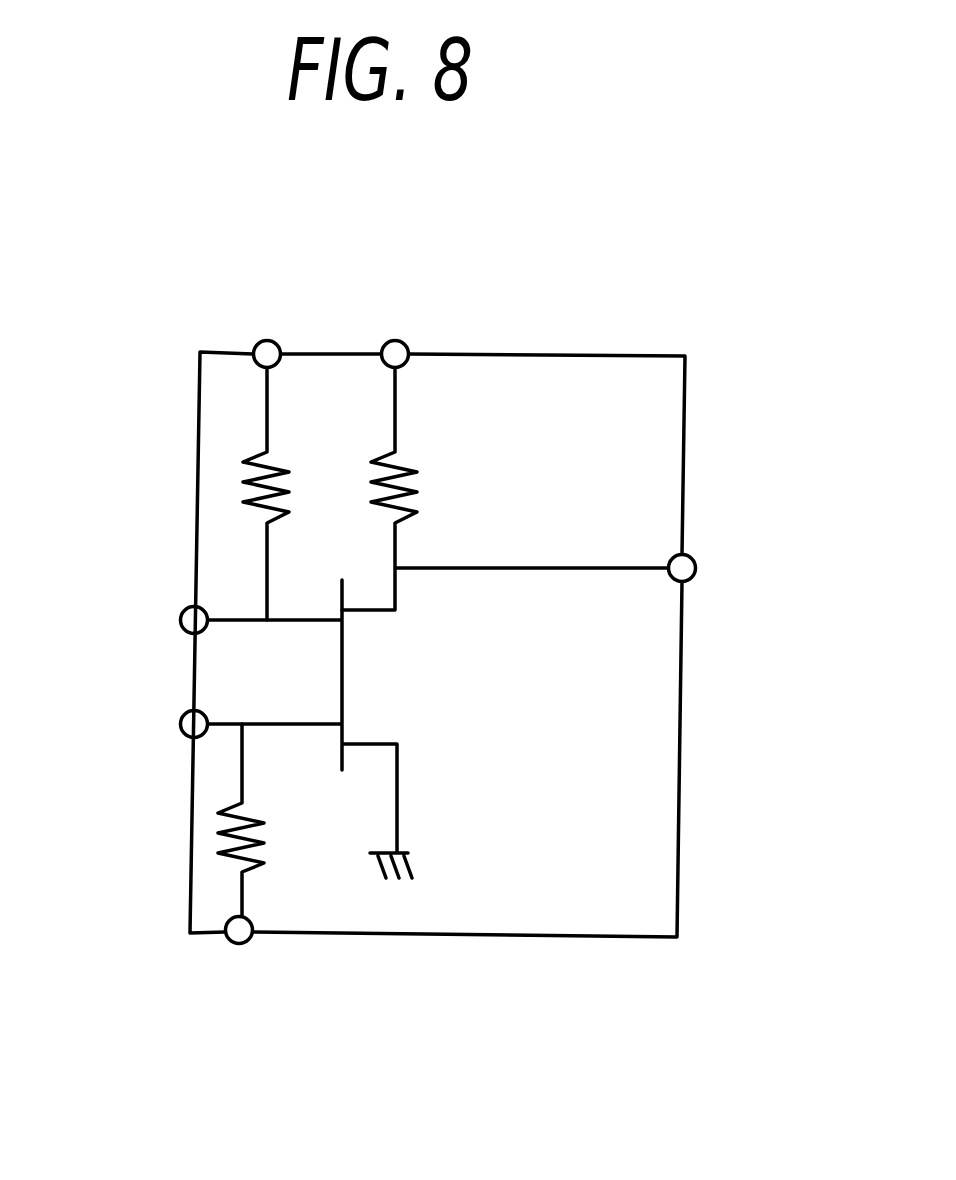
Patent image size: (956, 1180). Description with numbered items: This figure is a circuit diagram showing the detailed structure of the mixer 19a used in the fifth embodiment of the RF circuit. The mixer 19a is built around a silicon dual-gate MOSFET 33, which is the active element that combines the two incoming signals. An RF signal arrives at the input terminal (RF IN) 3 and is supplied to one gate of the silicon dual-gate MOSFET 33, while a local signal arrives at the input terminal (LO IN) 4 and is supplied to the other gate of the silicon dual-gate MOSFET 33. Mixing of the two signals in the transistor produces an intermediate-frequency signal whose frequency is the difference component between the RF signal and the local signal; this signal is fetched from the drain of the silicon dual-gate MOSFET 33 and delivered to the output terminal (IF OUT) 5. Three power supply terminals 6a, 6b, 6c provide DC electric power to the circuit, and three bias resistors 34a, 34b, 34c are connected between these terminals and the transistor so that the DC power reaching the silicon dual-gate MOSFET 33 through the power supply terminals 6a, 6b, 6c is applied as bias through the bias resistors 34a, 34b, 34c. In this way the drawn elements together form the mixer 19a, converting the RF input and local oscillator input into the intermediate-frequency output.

The input terminal (RF IN) 3 is at (183, 733).
The input terminal (LO IN) 4 is at (186, 610).
The output terminal (IF OUT) 5 is at (693, 575).
The power supply terminal 6a is at (250, 940).
The power supply terminal 6b is at (265, 340).
The power supply terminal 6c is at (405, 345).
The mixer 19a is at (677, 900).
The silicon dual-gate MOSFET 33 is at (344, 677).
The bias resistor 34a is at (257, 842).
The bias resistor 34b is at (290, 466).
The bias resistor 34c is at (415, 480).